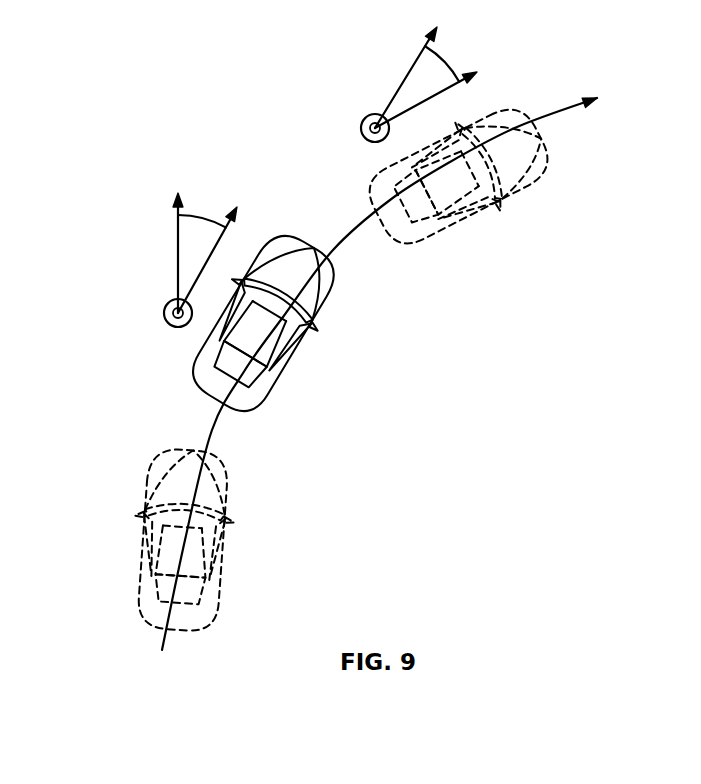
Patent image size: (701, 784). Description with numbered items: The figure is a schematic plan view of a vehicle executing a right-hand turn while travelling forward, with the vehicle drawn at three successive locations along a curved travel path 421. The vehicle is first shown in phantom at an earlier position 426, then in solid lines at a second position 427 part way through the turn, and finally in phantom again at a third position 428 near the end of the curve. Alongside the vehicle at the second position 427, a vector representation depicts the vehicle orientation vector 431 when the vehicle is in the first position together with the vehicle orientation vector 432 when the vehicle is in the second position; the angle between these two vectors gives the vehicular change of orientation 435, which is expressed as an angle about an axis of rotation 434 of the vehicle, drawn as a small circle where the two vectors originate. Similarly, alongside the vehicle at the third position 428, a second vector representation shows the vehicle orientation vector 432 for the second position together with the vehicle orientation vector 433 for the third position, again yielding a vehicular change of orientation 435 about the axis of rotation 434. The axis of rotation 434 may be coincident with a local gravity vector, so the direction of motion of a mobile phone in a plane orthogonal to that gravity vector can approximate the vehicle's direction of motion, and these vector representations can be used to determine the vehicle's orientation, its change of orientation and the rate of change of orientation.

The planned travel path 421 is at (207, 427).
The vehicle at earlier position (phantom) 426 is at (223, 558).
The second position 427 is at (300, 348).
The third position 428 is at (463, 223).
The vehicle orientation vector 431 is at (177, 252).
The vehicle orientation vector 432 is at (232, 212).
The vehicle orientation vector 433 is at (480, 72).
The axis of rotation 434 is at (163, 317).
The vehicular change of orientation 435 is at (202, 212).